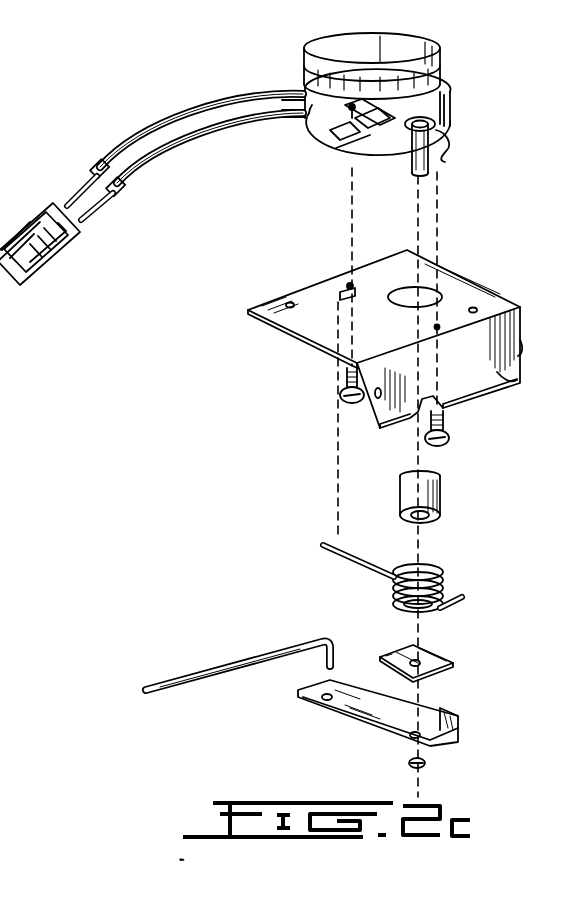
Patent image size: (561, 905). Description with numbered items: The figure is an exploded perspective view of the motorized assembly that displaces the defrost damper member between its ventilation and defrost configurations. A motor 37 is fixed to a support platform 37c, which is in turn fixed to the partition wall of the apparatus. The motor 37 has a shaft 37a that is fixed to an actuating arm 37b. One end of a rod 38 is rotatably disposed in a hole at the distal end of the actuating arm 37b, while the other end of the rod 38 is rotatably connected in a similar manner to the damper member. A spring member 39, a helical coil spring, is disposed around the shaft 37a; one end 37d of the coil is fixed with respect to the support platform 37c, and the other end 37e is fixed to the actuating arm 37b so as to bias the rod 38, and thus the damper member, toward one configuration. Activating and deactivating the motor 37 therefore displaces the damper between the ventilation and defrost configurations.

The motor 37 is at (438, 66).
The shaft 37a is at (433, 158).
The actuating arm 37b is at (458, 722).
The support platform 37c is at (480, 290).
The end of the coil 37d is at (330, 543).
The other end of the coil 37e is at (456, 599).
The rod 38 is at (221, 676).
The spring member 39 is at (440, 568).